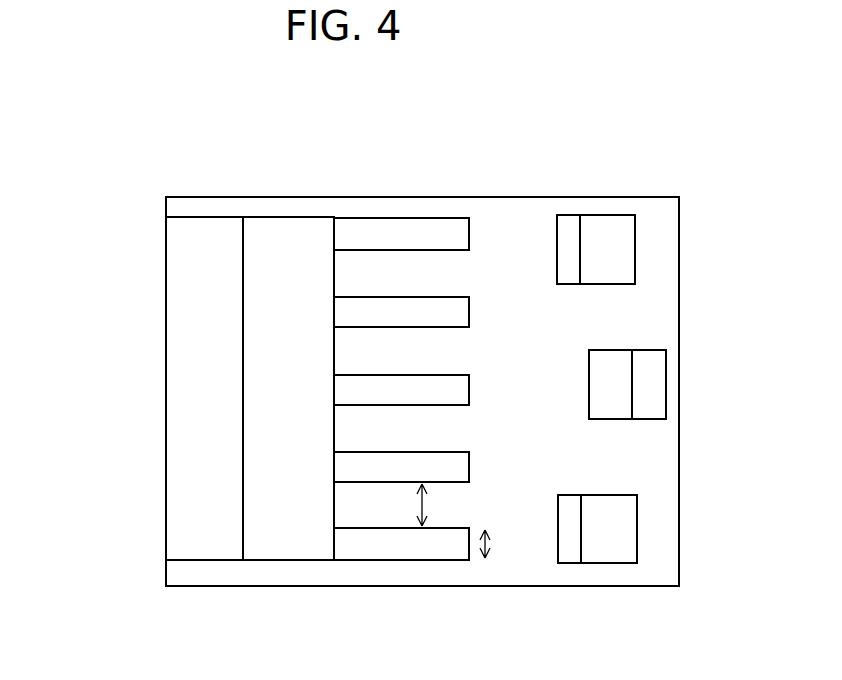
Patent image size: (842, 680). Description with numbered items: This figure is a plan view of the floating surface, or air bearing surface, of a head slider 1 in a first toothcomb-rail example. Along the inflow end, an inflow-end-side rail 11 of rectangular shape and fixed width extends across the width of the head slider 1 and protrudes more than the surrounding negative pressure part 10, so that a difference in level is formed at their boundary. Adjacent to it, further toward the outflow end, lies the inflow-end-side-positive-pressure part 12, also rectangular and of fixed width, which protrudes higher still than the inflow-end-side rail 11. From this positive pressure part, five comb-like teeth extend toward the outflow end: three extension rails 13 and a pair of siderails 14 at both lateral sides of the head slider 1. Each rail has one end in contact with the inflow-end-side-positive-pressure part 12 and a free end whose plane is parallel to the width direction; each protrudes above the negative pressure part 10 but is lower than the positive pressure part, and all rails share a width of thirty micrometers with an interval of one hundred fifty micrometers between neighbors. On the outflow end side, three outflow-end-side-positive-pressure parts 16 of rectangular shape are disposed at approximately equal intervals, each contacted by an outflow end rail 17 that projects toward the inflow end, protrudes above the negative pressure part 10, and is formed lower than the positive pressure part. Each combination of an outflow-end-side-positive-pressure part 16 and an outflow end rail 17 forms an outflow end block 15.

The head slider 1 is at (296, 177).
The negative pressure part 10 is at (547, 449).
The inflow-end-side rail 11 is at (182, 392).
The inflow-end-side-positive-pressure part 12 is at (287, 217).
The extension rails 13 is at (435, 310).
The siderails 14 is at (435, 226).
The outflow end block 15 is at (652, 383).
The outflow-end-side-positive-pressure parts 16 is at (615, 255).
The outflow end rails 17 is at (566, 220).